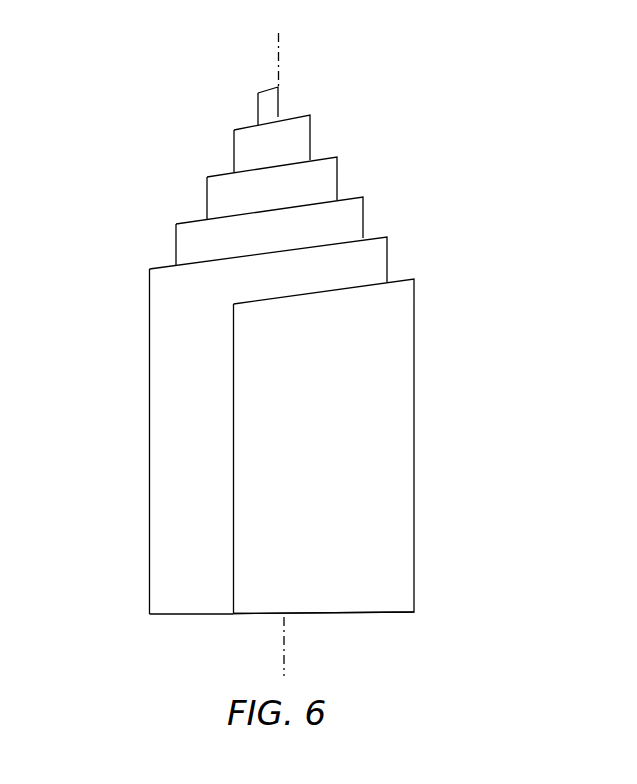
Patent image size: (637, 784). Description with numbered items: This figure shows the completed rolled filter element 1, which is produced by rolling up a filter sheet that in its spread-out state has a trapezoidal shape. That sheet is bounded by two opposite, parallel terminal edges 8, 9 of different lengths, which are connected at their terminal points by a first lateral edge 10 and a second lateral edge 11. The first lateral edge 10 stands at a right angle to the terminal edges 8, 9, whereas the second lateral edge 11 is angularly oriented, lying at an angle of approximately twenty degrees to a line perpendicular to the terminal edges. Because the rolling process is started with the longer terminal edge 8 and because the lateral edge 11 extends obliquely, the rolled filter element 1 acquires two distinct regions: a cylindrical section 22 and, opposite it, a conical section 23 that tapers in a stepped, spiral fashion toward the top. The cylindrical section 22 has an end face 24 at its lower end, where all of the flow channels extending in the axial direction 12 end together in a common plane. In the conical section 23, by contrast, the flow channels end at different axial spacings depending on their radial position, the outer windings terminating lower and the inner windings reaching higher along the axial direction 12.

The rolled filter element 1 is at (134, 129).
The longer terminal edge 8 is at (280, 99).
The shorter terminal edge 9 is at (233, 350).
The first lateral edge 10 is at (168, 617).
The second lateral edge 11 is at (152, 268).
The axial direction 12 is at (280, 50).
The cylindrical section 22 is at (446, 435).
The conical section 23 is at (394, 168).
The end face 24 is at (360, 615).